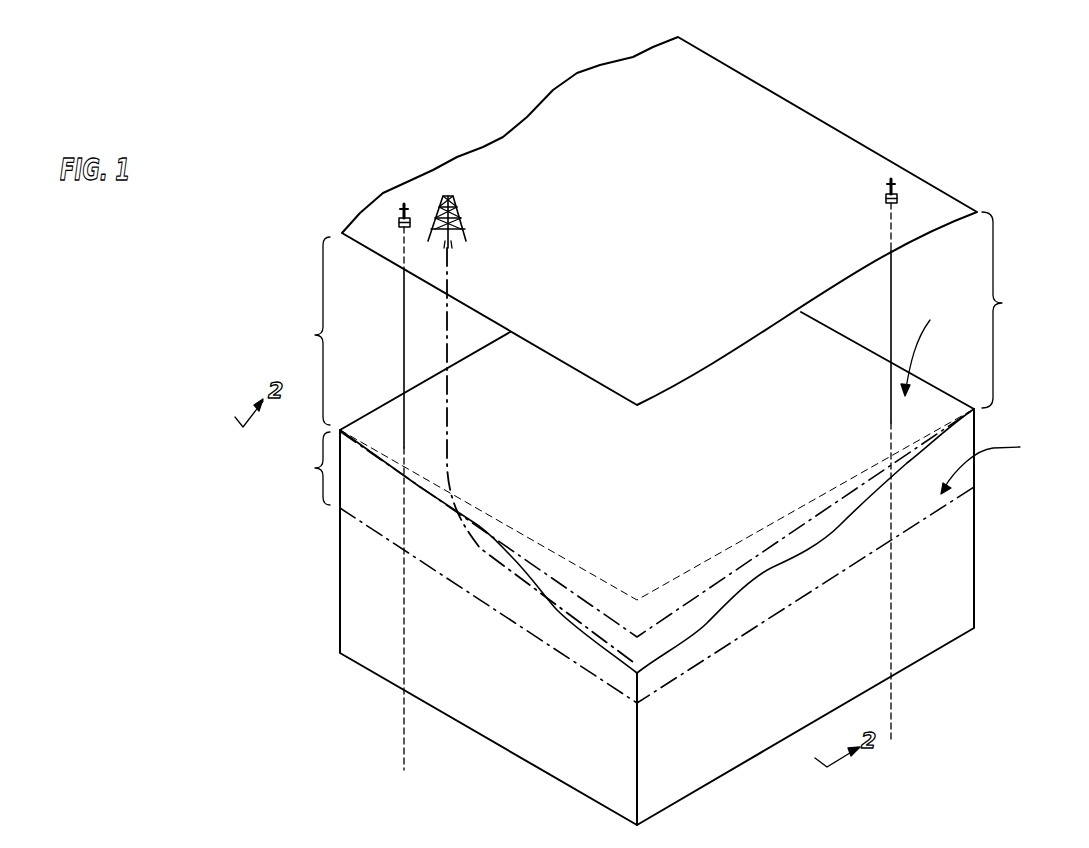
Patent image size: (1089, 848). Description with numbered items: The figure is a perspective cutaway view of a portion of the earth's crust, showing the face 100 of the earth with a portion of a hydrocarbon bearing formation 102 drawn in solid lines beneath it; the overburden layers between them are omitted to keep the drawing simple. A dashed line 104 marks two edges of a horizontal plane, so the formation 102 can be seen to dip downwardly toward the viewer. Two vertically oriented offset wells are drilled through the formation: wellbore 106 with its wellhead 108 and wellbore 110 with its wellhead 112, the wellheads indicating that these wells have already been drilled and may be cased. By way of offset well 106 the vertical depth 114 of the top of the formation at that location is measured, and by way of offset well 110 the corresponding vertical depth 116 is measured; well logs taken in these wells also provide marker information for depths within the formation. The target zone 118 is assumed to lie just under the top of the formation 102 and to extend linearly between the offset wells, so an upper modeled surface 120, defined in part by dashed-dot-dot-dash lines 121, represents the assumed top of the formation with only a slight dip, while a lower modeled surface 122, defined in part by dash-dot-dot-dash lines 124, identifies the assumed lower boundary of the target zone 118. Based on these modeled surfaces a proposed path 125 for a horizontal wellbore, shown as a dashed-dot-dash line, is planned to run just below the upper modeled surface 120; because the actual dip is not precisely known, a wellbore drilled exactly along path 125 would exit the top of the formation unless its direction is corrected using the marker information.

The face of the earth 100 is at (701, 152).
The hydrocarbon bearing formation 102 is at (458, 656).
The dashed line 104 is at (512, 530).
The wellbore 106 is at (403, 307).
The wellhead 108 is at (402, 206).
The wellbore 110 is at (892, 273).
The wellhead 112 is at (894, 183).
The vertical depth 114 is at (315, 335).
The vertical depth 116 is at (1002, 303).
The target zone 118 is at (315, 468).
The upper modeled surface 120 is at (938, 346).
The dashed-dot-dot-dash lines 121 is at (577, 592).
The lower modeled surface 122 is at (1000, 464).
The dash-dot-dot-dash lines 124 is at (617, 687).
The proposed path 125 is at (446, 432).